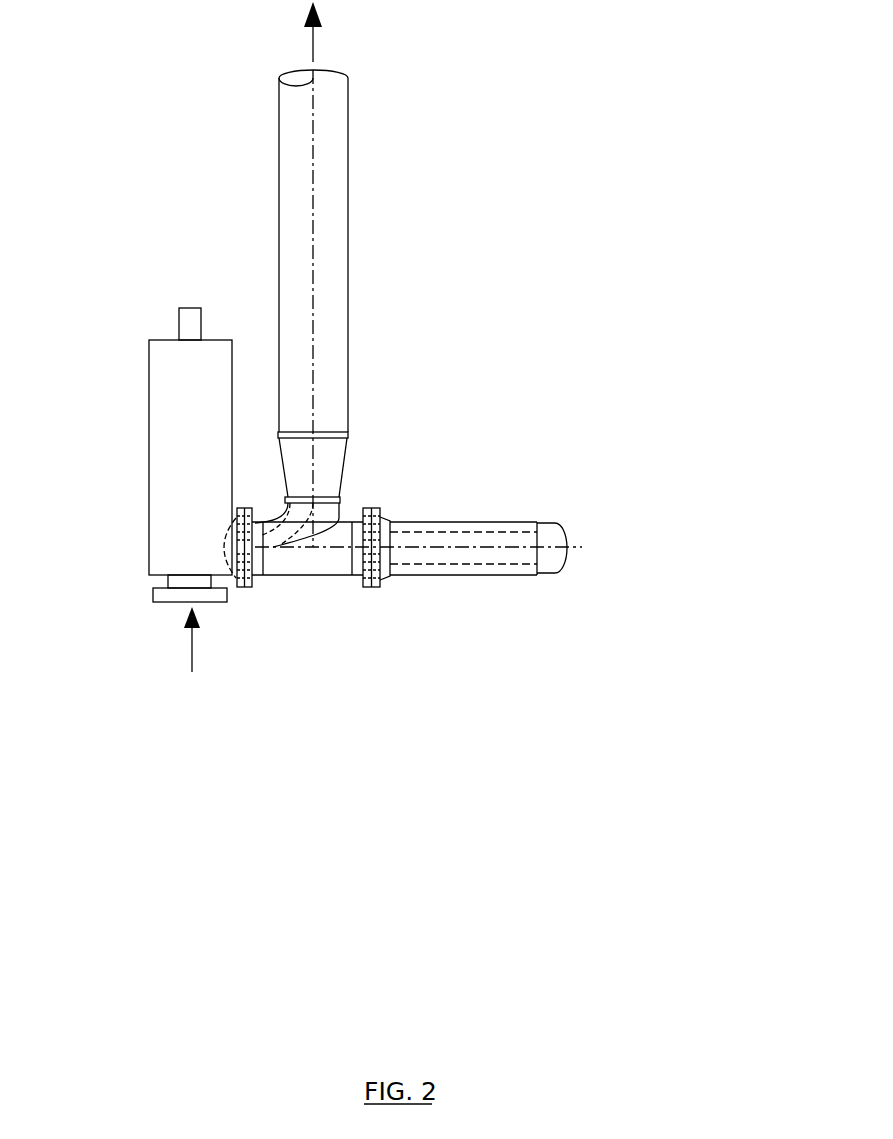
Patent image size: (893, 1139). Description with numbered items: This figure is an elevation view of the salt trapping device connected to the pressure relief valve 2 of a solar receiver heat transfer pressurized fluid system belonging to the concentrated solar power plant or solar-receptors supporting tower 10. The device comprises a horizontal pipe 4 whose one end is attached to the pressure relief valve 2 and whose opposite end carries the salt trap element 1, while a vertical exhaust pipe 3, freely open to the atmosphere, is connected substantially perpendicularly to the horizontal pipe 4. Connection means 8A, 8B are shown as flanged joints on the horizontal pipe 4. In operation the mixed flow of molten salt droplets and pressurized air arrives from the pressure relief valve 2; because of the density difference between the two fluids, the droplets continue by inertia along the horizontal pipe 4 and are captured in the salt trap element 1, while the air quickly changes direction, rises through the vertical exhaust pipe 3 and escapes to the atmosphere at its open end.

The salt trap element 1 is at (470, 545).
The pressure relief valve 2 is at (130, 435).
The vertical exhaust pipe 3 is at (367, 247).
The horizontal pipe 4 is at (315, 577).
The connection means 8A is at (251, 628).
The connection means 8B is at (383, 608).
The concentrated solar power plant/solar-receptors supporting tower 10 is at (412, 415).